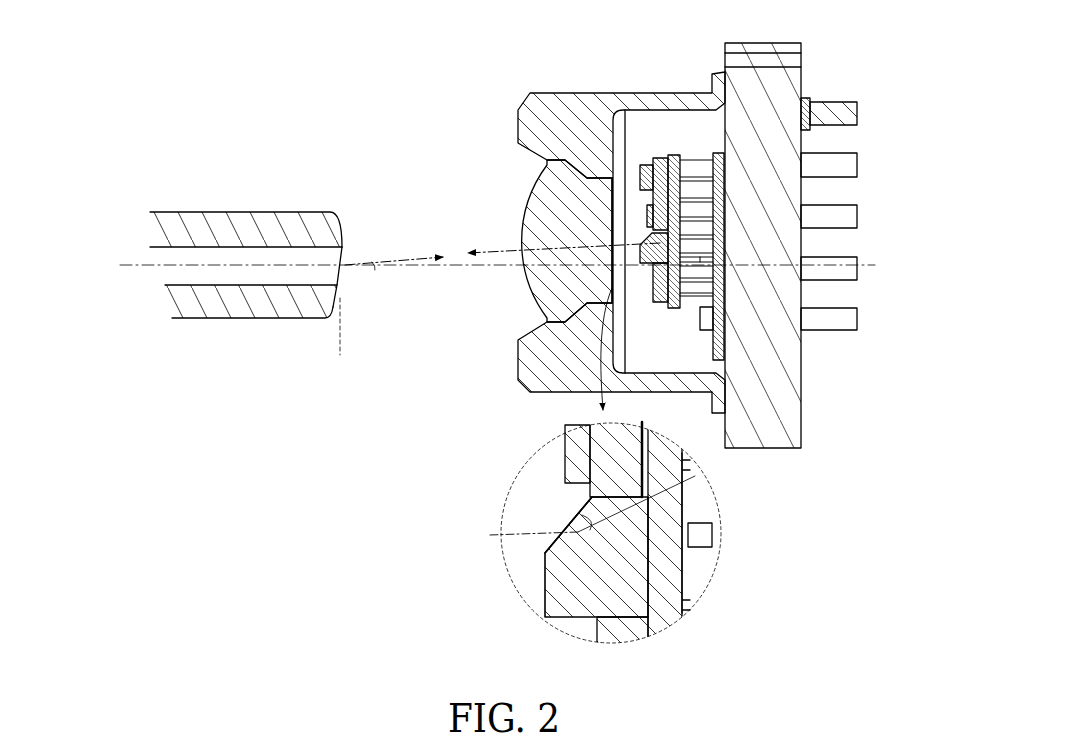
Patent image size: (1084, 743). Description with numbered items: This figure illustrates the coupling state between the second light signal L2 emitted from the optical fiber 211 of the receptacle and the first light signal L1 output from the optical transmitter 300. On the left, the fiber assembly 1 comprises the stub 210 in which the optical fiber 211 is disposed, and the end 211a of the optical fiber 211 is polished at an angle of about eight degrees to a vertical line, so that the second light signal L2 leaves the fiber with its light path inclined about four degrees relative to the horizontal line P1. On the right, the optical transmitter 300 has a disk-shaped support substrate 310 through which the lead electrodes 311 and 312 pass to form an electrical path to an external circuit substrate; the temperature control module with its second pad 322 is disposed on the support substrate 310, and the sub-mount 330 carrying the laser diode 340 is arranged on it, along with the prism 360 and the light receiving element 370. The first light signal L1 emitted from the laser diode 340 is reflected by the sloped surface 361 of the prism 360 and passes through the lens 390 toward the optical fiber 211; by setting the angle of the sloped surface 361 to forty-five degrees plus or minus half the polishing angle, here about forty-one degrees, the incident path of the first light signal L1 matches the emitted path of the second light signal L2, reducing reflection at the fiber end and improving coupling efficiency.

The optical fiber 1 is at (253, 241).
The stub 210 is at (233, 225).
The optical fiber 211 is at (229, 272).
The end of the optical fiber 211a is at (344, 246).
The optical transmitter 300 is at (573, 242).
The support substrate 310 is at (790, 402).
The lead electrode 311 is at (858, 318).
The lead electrode 312 is at (858, 112).
The second pad 322 is at (668, 568).
The sub-mount 330 is at (600, 428).
The laser diode 340 is at (578, 460).
The prism 360 is at (568, 582).
The sloped surface 361 is at (585, 540).
The light receiving element 370 is at (625, 643).
The lens 390 is at (542, 288).
The first light signal L1 is at (484, 249).
The second light signal L2 is at (412, 260).
The horizontal line P1 is at (508, 265).